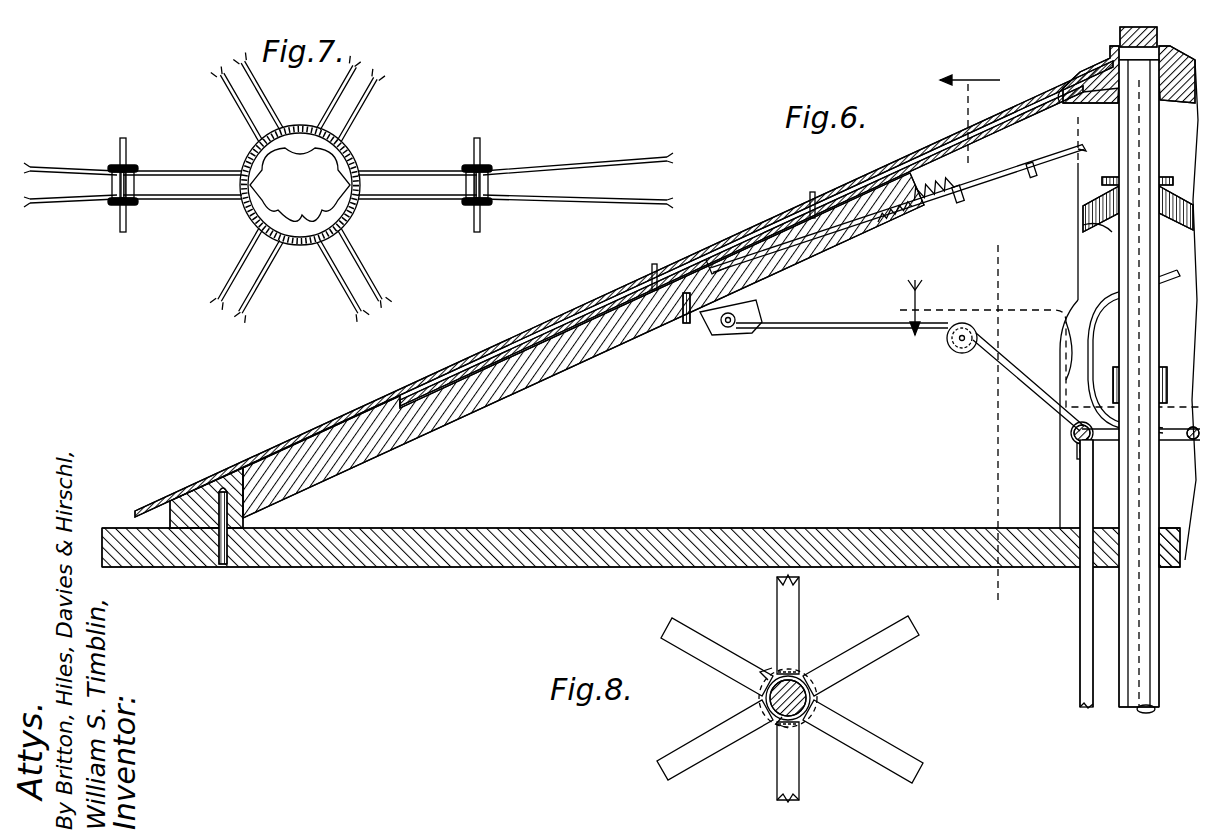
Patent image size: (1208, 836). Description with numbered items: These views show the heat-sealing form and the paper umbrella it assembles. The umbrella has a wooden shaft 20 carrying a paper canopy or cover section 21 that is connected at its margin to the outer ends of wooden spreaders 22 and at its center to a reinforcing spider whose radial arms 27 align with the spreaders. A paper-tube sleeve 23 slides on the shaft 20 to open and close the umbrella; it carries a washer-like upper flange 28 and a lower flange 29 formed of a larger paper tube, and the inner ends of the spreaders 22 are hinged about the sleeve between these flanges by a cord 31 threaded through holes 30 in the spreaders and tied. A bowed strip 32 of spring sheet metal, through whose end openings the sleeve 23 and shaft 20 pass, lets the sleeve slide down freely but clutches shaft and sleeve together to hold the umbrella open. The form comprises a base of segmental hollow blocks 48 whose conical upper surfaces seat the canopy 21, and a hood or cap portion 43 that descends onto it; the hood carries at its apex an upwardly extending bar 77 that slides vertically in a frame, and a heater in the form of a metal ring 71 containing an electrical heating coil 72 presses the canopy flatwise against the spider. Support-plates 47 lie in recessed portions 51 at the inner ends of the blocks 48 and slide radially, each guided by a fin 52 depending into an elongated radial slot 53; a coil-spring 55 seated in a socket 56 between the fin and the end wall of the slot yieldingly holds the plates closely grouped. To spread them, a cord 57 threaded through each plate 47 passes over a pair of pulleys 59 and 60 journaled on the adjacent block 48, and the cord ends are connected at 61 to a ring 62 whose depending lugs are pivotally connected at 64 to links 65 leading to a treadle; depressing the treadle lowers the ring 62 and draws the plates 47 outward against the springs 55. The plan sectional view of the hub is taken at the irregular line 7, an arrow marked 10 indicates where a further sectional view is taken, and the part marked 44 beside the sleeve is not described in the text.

In FIG. 6, the irregular section line 7 is at (911, 310).
In FIG. 6, the section line 10- 10 is at (978, 70).
In FIG. 6, the shaft portion 20 is at (1140, 140).
In FIG. 8, the shaft portion 20 is at (812, 698).
In FIG. 6, the canopy or cover section 21 is at (140, 514).
In FIG. 6, the spreaders 22 is at (1080, 245).
In FIG. 8, the spreaders 22 is at (722, 655).
In FIG. 6, the sleeve 23 is at (1118, 232).
In FIG. 8, the sleeve 23 is at (776, 726).
In FIG. 6, the radial arms 27 is at (1139, 88).
In FIG. 6, the upper flange 28 is at (1100, 181).
In FIG. 6, the lower flange 29 is at (1148, 378).
In FIG. 8, the holes 30 is at (782, 670).
In FIG. 8, the cord 31 is at (804, 676).
In FIG. 6, the spring strip 32 is at (1098, 310).
In FIG. 6, the hood or cap portion 43 is at (166, 490).
In FIG. 6, the bracket 44 is at (1066, 345).
In FIG. 6, the support-plates 47 is at (766, 223).
In FIG. 6, the segmental hollow blocks 48 is at (577, 380).
In FIG. 6, the recessed portions 51 is at (716, 255).
In FIG. 6, the fin 52 is at (1016, 168).
In FIG. 6, the slot 53 is at (958, 204).
In FIG. 6, the coil-springs 55 is at (934, 208).
In FIG. 6, the socket 56 is at (880, 236).
In FIG. 6, the cord 57 is at (816, 198).
In FIG. 7, the cord 57 is at (340, 125).
In FIG. 6, the pulley 59 is at (738, 320).
In FIG. 6, the pulley 60 is at (955, 352).
In FIG. 7, the pulley 60 is at (140, 186).
In FIG. 6, the cord connection 61 is at (1072, 432).
In FIG. 7, the cord connection 61 is at (300, 180).
In FIG. 6, the ring 62 is at (1072, 440).
In FIG. 7, the ring 62 is at (299, 243).
In FIG. 6, the pivot connection 64 is at (1076, 452).
In FIG. 6, the links 65 is at (1078, 585).
In FIG. 6, the metal ring 71 is at (1062, 82).
In FIG. 6, the electrical heating coil 72 is at (1082, 72).
In FIG. 6, the upwardly extending bar 77 is at (1158, 36).